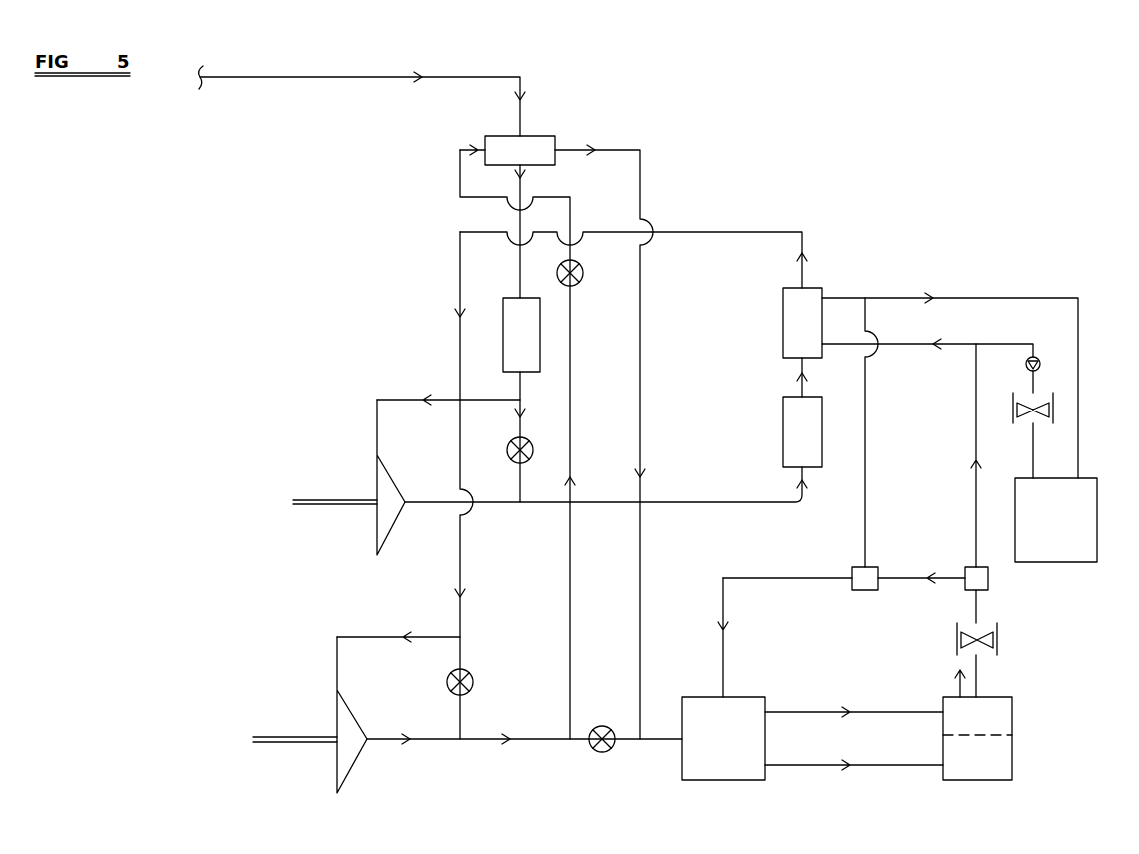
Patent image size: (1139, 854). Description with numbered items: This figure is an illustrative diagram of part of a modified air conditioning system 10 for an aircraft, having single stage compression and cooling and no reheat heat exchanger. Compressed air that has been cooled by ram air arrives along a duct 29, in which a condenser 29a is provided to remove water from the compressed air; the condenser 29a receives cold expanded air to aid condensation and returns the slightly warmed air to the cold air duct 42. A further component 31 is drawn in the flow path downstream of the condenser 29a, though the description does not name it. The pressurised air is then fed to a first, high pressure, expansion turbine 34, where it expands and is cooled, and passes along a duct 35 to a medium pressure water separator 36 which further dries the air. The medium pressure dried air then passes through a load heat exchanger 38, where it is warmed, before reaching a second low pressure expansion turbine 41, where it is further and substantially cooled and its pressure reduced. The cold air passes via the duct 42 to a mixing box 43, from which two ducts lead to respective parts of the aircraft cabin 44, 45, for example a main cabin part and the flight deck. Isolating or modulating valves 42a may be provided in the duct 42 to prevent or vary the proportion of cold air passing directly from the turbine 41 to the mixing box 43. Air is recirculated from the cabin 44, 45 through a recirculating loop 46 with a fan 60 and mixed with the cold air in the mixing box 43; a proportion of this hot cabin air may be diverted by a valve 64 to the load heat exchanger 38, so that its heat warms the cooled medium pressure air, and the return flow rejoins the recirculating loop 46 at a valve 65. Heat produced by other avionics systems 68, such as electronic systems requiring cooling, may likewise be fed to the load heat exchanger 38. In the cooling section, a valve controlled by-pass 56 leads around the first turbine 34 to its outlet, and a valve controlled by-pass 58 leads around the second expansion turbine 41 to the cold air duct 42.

The system 10 is at (263, 219).
The duct 29 is at (449, 75).
The condenser 29a is at (548, 136).
The heat exchanger 31 is at (540, 331).
The first, high pressure, expansion turbine 34 is at (387, 522).
The duct 35 is at (805, 500).
The medium pressure water separator 36 is at (783, 450).
The load heat exchanger 38 is at (783, 332).
The second low pressure expansion turbine 41 is at (350, 762).
The duct 42 is at (535, 740).
The isolating valve 42a is at (634, 300).
The mixing box 43 is at (745, 780).
The aircraft cabin 44 is at (1012, 717).
The aircraft cabin 45 is at (1012, 767).
The recirculating loop 46 is at (946, 578).
The valve controlled by-pass 56 is at (522, 409).
The valve controlled by-pass 58 is at (473, 681).
The fan 60 is at (984, 655).
The valve 64 is at (987, 565).
The valve 65 is at (865, 590).
The avionics systems 68 is at (1073, 562).